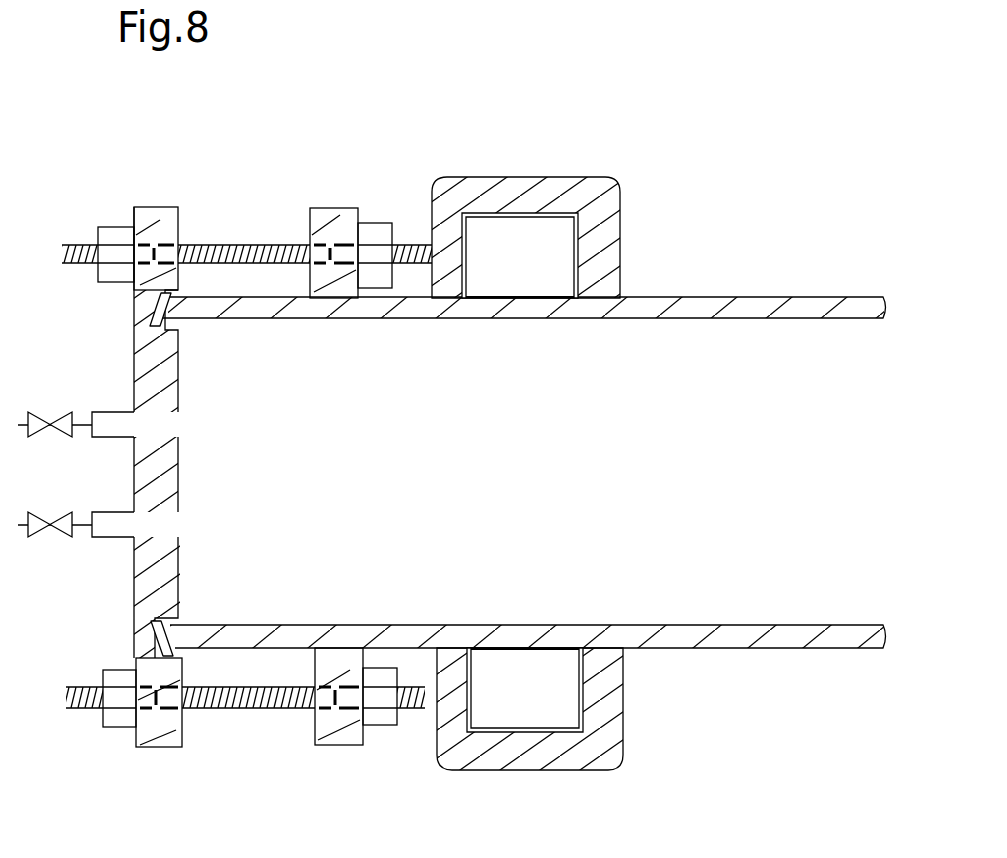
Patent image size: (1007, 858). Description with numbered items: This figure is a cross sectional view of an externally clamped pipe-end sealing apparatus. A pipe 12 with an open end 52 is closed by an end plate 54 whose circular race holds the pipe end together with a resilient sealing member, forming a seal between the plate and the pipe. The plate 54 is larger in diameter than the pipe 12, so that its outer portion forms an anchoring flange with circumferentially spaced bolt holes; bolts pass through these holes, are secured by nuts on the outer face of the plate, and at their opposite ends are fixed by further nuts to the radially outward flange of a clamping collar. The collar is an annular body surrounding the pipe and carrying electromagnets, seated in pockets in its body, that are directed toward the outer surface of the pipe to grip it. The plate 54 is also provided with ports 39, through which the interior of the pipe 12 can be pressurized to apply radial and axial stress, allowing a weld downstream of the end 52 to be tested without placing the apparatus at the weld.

The pipe 12 is at (782, 300).
The open end 52 is at (230, 622).
The end plate 54 is at (136, 565).
The ports 39 is at (26, 535).